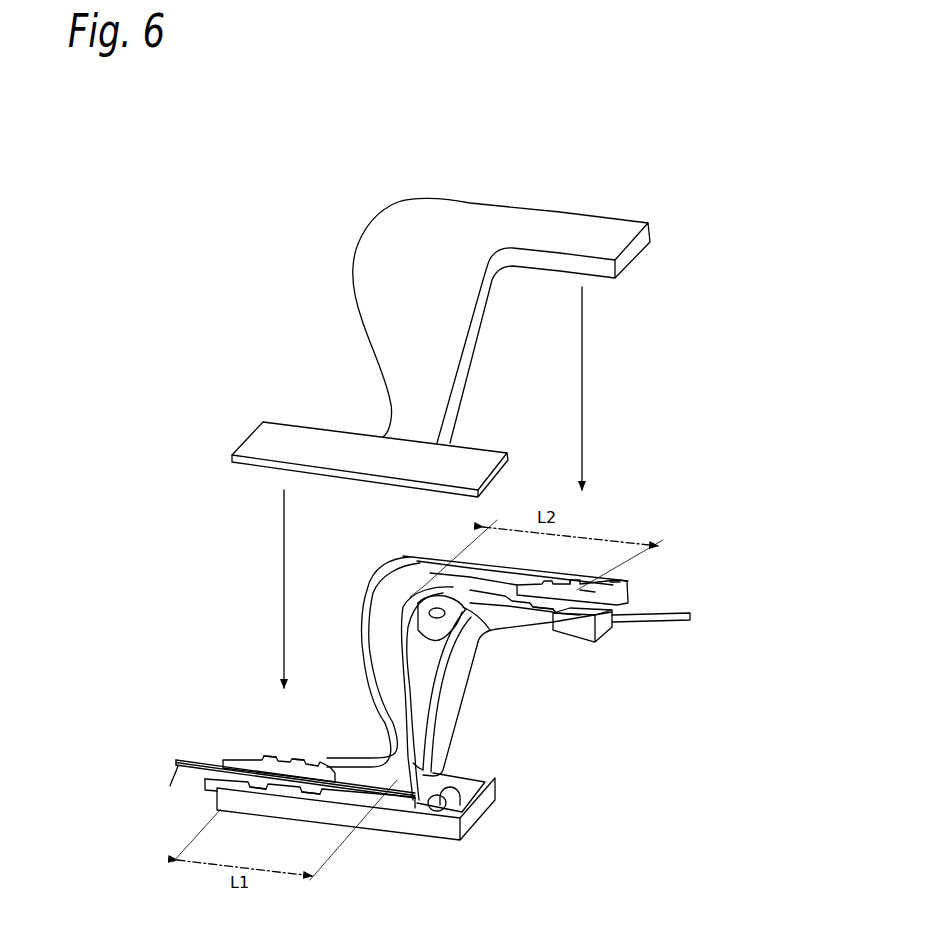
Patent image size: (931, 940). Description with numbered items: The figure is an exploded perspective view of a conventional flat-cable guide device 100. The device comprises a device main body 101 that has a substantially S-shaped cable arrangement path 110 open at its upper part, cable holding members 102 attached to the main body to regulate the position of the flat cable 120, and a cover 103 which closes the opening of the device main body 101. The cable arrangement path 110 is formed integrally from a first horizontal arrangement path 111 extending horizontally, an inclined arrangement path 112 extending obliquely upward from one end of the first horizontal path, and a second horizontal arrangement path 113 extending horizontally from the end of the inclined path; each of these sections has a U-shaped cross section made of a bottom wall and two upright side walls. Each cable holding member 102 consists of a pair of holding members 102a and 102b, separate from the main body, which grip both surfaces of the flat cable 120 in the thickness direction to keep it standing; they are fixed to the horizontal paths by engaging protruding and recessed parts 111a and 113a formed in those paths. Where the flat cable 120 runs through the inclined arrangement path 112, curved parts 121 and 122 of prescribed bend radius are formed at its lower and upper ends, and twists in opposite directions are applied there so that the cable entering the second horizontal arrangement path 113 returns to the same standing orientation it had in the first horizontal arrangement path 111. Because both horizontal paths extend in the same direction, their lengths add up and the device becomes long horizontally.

The flat-cable guide device 100 is at (440, 850).
The device main body 101 is at (460, 749).
The cable holding member 102 is at (237, 645).
The holding member 102a is at (248, 756).
The holding member 102b is at (254, 757).
The cover 103 is at (363, 313).
The cable arrangement path 110 is at (427, 713).
The first horizontal arrangement path 111 is at (383, 825).
The protruding and recessed part for engagement 111a is at (298, 755).
The inclined arrangement path 112 is at (460, 690).
The second horizontal arrangement path 113 is at (583, 636).
The protruding and recessed part for engagement 113a is at (578, 585).
The flat cable 120 is at (190, 778).
The curved part 121 is at (410, 810).
The curved part 122 is at (412, 605).